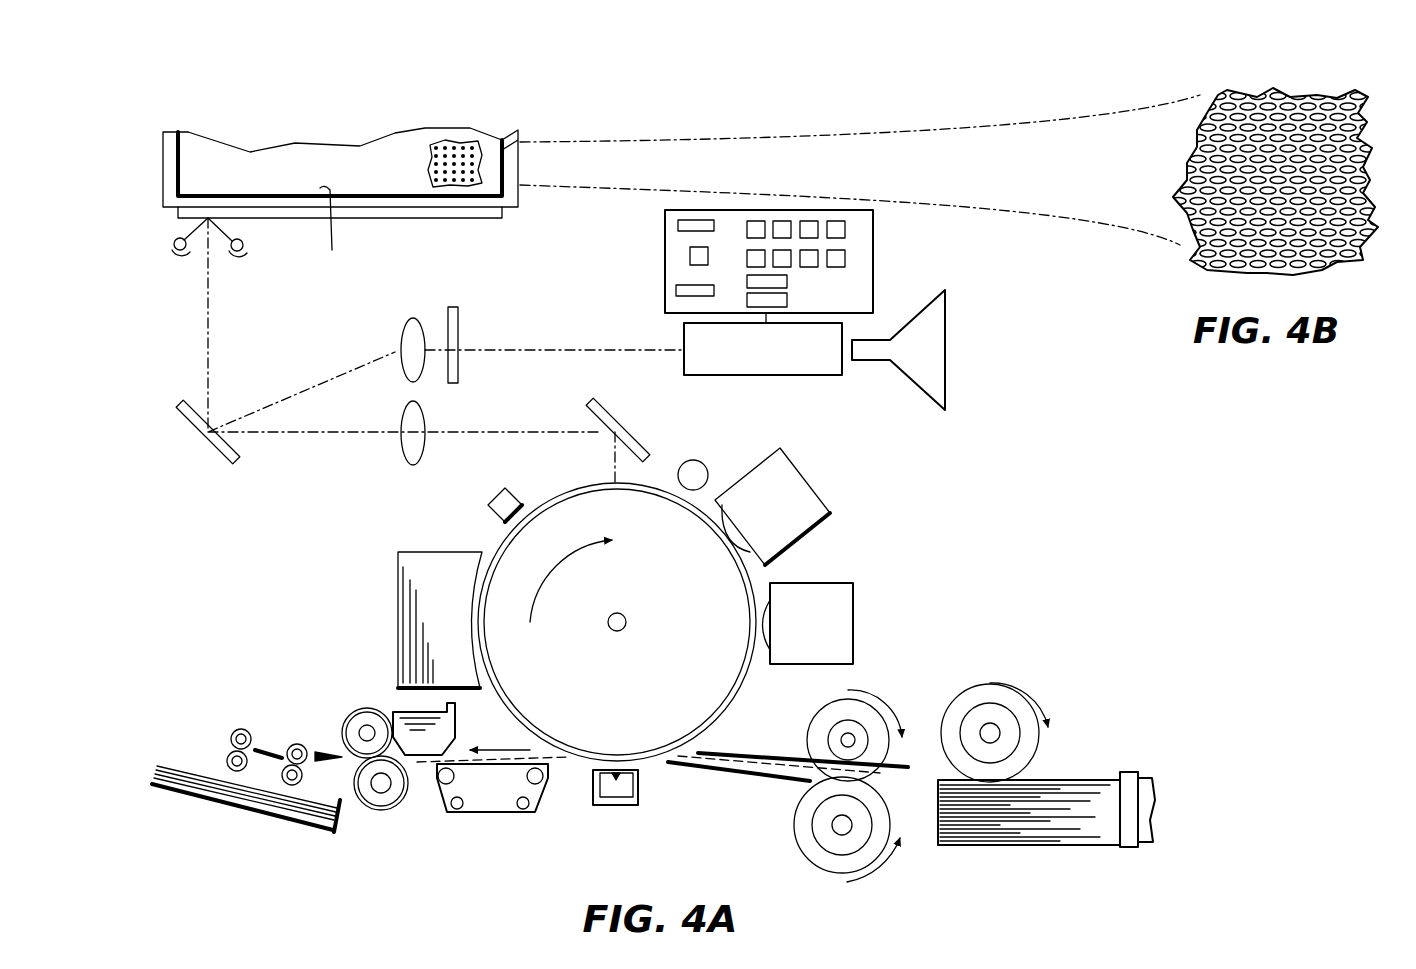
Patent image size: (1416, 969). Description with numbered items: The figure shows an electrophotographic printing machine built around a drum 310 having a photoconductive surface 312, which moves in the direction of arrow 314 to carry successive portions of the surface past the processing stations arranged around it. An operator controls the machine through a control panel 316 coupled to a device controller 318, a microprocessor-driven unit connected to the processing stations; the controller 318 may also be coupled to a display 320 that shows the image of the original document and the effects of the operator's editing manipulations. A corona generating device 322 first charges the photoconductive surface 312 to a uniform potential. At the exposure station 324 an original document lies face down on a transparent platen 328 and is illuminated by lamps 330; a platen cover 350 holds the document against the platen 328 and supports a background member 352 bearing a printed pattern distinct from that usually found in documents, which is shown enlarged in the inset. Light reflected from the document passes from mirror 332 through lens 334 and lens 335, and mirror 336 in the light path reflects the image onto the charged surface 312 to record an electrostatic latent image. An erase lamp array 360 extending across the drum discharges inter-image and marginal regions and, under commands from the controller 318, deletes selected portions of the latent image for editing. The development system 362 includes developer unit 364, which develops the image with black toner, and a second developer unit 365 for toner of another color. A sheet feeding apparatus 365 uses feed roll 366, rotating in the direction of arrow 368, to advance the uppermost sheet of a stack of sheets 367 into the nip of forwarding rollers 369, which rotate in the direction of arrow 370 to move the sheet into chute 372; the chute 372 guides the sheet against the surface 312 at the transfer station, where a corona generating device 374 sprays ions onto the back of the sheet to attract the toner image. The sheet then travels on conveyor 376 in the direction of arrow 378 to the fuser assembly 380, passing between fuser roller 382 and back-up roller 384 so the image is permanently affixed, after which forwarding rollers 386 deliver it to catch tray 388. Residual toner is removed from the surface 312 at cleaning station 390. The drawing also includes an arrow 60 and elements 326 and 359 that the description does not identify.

The rotation direction of lower transport roller 60 is at (880, 868).
The drum 310 is at (550, 485).
The photoconductive surface 312 is at (693, 507).
The arrow 314 is at (560, 555).
The control panel 316 is at (886, 250).
The device controller 318 is at (790, 385).
The display 320 is at (963, 368).
The corona generating device 322 is at (485, 503).
The exposure station 324 is at (160, 400).
The original document 326 is at (338, 233).
The transparent platen 328 is at (440, 215).
The platen support rollers 330 is at (245, 253).
The mirror 332 is at (198, 430).
The lens 334 is at (425, 415).
The lens 335 is at (415, 318).
The mirror 336 is at (622, 430).
The platen cover 350 is at (520, 192).
The background member 352 is at (520, 142).
The optical filter plate 359 is at (453, 340).
The erase lamp array 360 is at (695, 460).
The development system 362 is at (922, 535).
The first developer unit 364 is at (745, 525).
The second developer unit 365 is at (777, 620).
The feed roll 366 is at (1000, 705).
The stack of sheets 367 is at (1027, 835).
The arrow 368 is at (1043, 680).
The forwarding rollers 369 is at (855, 717).
The arrow 370 is at (885, 690).
The chute 372 is at (719, 772).
The corona generating device 374 is at (612, 805).
The conveyor 376 is at (475, 815).
The arrow 378 is at (500, 749).
The fuser assembly 380 is at (348, 697).
The fuser roller 382 is at (343, 728).
The back-up roller 384 is at (398, 800).
The forwarding rollers 386 is at (296, 744).
The catch tray 388 is at (250, 812).
The cleaning station 390 is at (363, 650).